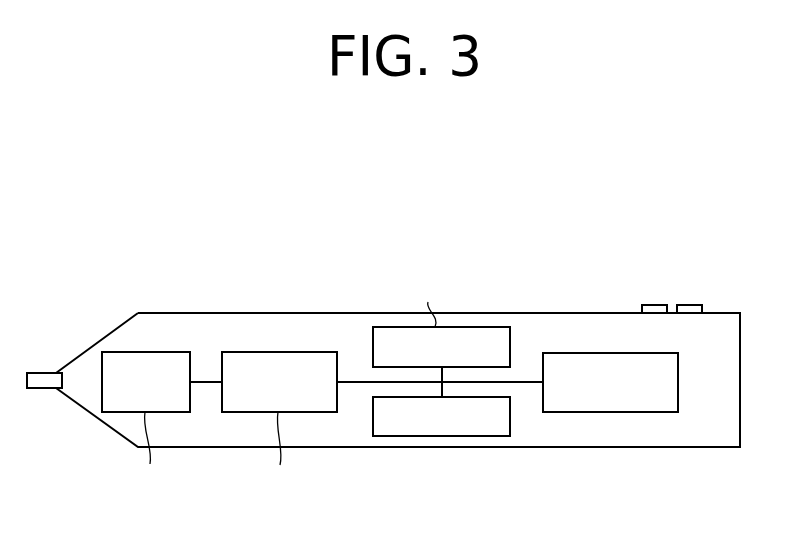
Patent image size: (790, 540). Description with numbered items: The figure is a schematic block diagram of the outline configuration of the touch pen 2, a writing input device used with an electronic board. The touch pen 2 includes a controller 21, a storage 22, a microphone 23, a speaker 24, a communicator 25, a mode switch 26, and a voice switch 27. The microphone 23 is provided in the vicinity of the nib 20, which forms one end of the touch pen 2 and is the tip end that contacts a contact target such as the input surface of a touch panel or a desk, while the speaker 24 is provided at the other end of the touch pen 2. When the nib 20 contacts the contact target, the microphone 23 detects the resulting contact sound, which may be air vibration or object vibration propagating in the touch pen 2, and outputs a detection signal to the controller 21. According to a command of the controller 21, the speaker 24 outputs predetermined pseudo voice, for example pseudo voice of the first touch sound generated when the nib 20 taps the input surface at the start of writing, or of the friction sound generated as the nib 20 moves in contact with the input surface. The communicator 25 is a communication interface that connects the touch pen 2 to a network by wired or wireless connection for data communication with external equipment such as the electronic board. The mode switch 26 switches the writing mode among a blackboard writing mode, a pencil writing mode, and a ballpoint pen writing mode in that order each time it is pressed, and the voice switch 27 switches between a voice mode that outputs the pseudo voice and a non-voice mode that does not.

The touch pen 2 is at (545, 222).
The nib 20 is at (43, 373).
The controller 21 is at (280, 352).
The storage 22 is at (438, 436).
The microphone 23 is at (152, 352).
The speaker 24 is at (602, 353).
The communicator 25 is at (382, 327).
The mode switch 26 is at (655, 305).
The voice switch 27 is at (692, 305).